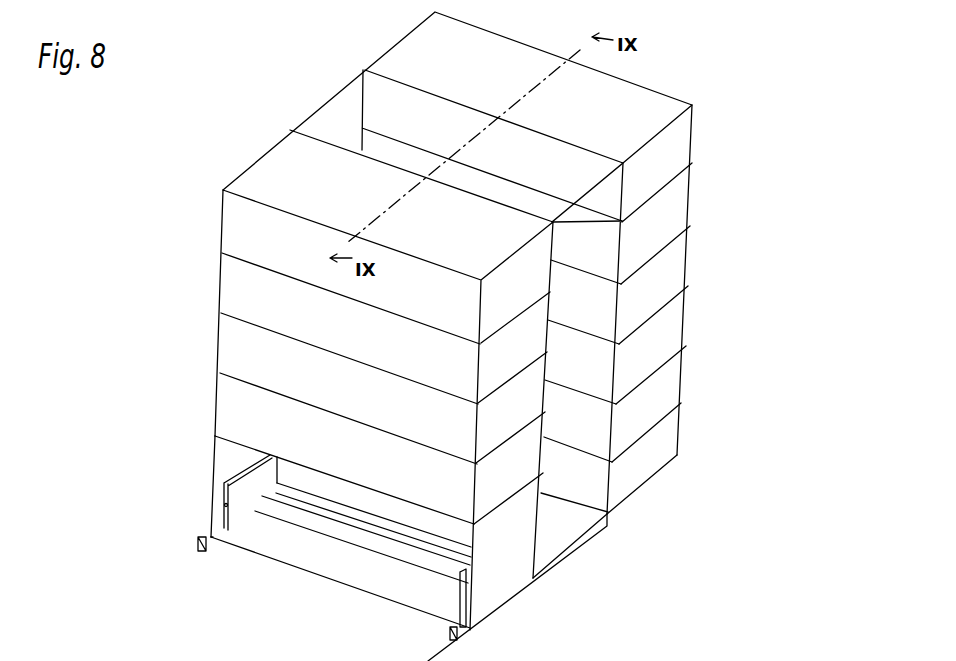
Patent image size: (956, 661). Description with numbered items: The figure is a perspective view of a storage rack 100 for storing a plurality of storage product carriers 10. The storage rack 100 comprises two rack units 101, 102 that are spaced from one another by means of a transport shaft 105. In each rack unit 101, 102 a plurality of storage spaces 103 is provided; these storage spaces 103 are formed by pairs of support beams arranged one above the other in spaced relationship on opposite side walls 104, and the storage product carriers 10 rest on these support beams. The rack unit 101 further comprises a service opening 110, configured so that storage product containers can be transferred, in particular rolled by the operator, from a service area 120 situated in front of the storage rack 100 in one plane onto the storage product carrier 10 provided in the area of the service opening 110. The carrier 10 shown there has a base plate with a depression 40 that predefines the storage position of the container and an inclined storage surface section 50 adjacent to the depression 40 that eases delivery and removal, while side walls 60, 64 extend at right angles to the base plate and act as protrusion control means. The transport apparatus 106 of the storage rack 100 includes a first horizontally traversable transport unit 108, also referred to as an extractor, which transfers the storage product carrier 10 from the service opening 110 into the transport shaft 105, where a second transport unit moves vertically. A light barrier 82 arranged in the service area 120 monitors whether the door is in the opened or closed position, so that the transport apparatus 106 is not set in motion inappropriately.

The storage rack 100 is at (779, 41).
The rack unit 101 is at (226, 152).
The rack unit 102 is at (378, 27).
The storage spaces 103 is at (686, 254).
The side walls 104 is at (289, 127).
The transport shaft 105 is at (338, 112).
The transport apparatus 106 is at (601, 552).
The first transport unit 108 is at (567, 563).
The service opening 110 is at (208, 465).
The storage product carrier 10 is at (277, 569).
The depression 40 is at (412, 542).
The storage surface section 50 is at (352, 540).
The side wall 60 is at (216, 504).
The side wall 64 is at (455, 613).
The light barrier 82 is at (199, 540).
The service area 120 is at (220, 581).